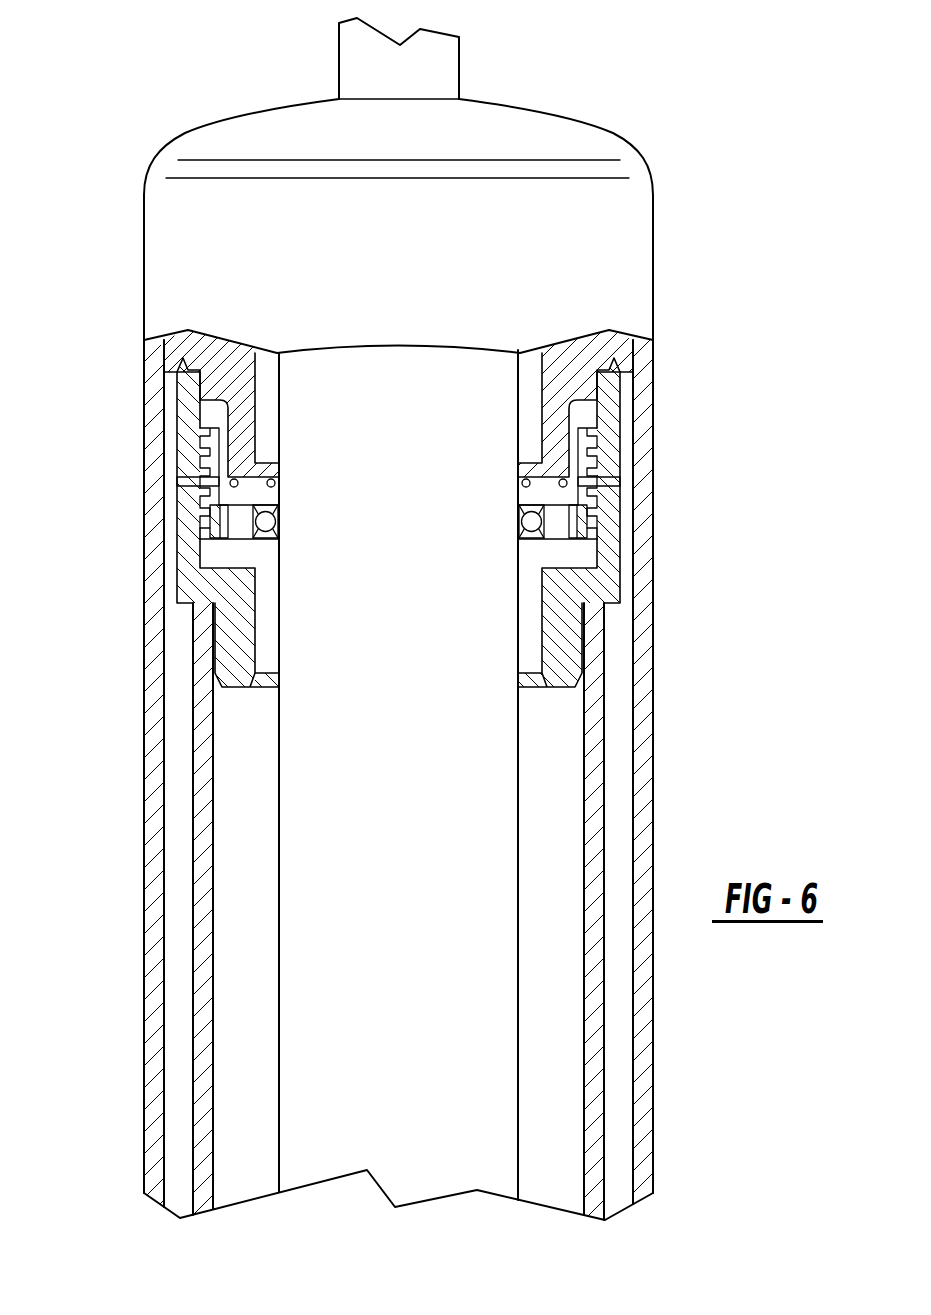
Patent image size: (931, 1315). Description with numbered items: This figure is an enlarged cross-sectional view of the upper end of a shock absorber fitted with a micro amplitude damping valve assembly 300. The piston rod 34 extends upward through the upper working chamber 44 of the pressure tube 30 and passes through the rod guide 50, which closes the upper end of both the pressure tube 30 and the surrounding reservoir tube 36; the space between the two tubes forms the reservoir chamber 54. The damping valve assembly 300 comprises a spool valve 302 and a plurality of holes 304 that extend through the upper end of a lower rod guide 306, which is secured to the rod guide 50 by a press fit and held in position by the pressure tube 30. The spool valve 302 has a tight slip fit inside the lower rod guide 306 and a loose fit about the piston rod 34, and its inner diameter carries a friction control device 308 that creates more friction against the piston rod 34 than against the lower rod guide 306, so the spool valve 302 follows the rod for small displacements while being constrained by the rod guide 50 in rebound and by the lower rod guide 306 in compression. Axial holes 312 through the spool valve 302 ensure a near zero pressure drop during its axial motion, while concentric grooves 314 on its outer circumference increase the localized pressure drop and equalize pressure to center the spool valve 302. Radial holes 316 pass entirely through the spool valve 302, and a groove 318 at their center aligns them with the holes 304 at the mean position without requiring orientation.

The micro amplitude damping valve assembly 300 is at (711, 434).
The rod guide 50 is at (633, 352).
The spool valve 302 is at (203, 447).
The plurality of holes 304 is at (175, 482).
The lower rod guide 306 is at (222, 640).
The friction control device 308 is at (605, 525).
The axial holes 312 is at (242, 517).
The concentric grooves 314 is at (207, 532).
The radial holes 316 is at (522, 485).
The groove 318 is at (612, 487).
The piston rod 34 is at (377, 925).
The reservoir tube 36 is at (150, 793).
The upper working chamber 44 is at (248, 1013).
The reservoir chamber 54 is at (168, 880).
The pressure tube 30 is at (205, 1005).